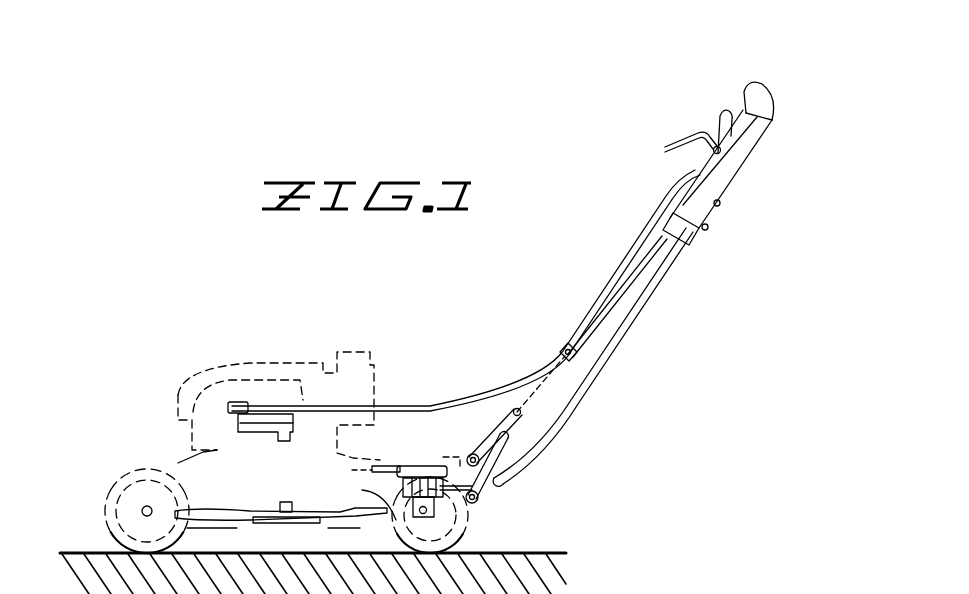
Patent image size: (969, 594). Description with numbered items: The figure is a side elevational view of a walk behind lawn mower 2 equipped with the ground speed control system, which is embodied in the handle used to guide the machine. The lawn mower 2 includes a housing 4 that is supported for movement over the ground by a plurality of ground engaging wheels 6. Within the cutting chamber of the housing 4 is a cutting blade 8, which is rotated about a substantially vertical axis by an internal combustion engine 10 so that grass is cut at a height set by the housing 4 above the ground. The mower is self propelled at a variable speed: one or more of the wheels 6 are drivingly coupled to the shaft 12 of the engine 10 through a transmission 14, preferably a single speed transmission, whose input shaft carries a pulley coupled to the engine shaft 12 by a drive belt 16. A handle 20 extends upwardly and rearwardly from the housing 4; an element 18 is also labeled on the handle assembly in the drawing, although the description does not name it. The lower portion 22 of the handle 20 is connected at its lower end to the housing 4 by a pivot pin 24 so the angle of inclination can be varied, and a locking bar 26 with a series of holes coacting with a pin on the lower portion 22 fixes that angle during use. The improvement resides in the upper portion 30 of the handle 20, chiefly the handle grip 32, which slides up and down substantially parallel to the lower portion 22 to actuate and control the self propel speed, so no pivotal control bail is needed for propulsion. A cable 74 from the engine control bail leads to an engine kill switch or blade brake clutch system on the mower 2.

The lawn mower 2 is at (337, 341).
The housing 4 is at (176, 466).
The ground engaging wheels 6 is at (117, 468).
The cutting blade 8 is at (236, 513).
The internal combustion engine 10 is at (244, 366).
The shaft 12 is at (296, 437).
The transmission 14 is at (401, 489).
The drive belt 16 is at (393, 467).
The handle tube 18 is at (642, 308).
The handle 20 is at (780, 90).
The lower portion 22 is at (609, 322).
The pivot pin 24 is at (474, 460).
The locking bar 26 is at (503, 470).
The upper portion 30 is at (742, 198).
The handle grip 32 is at (761, 157).
The cable 74 is at (609, 279).